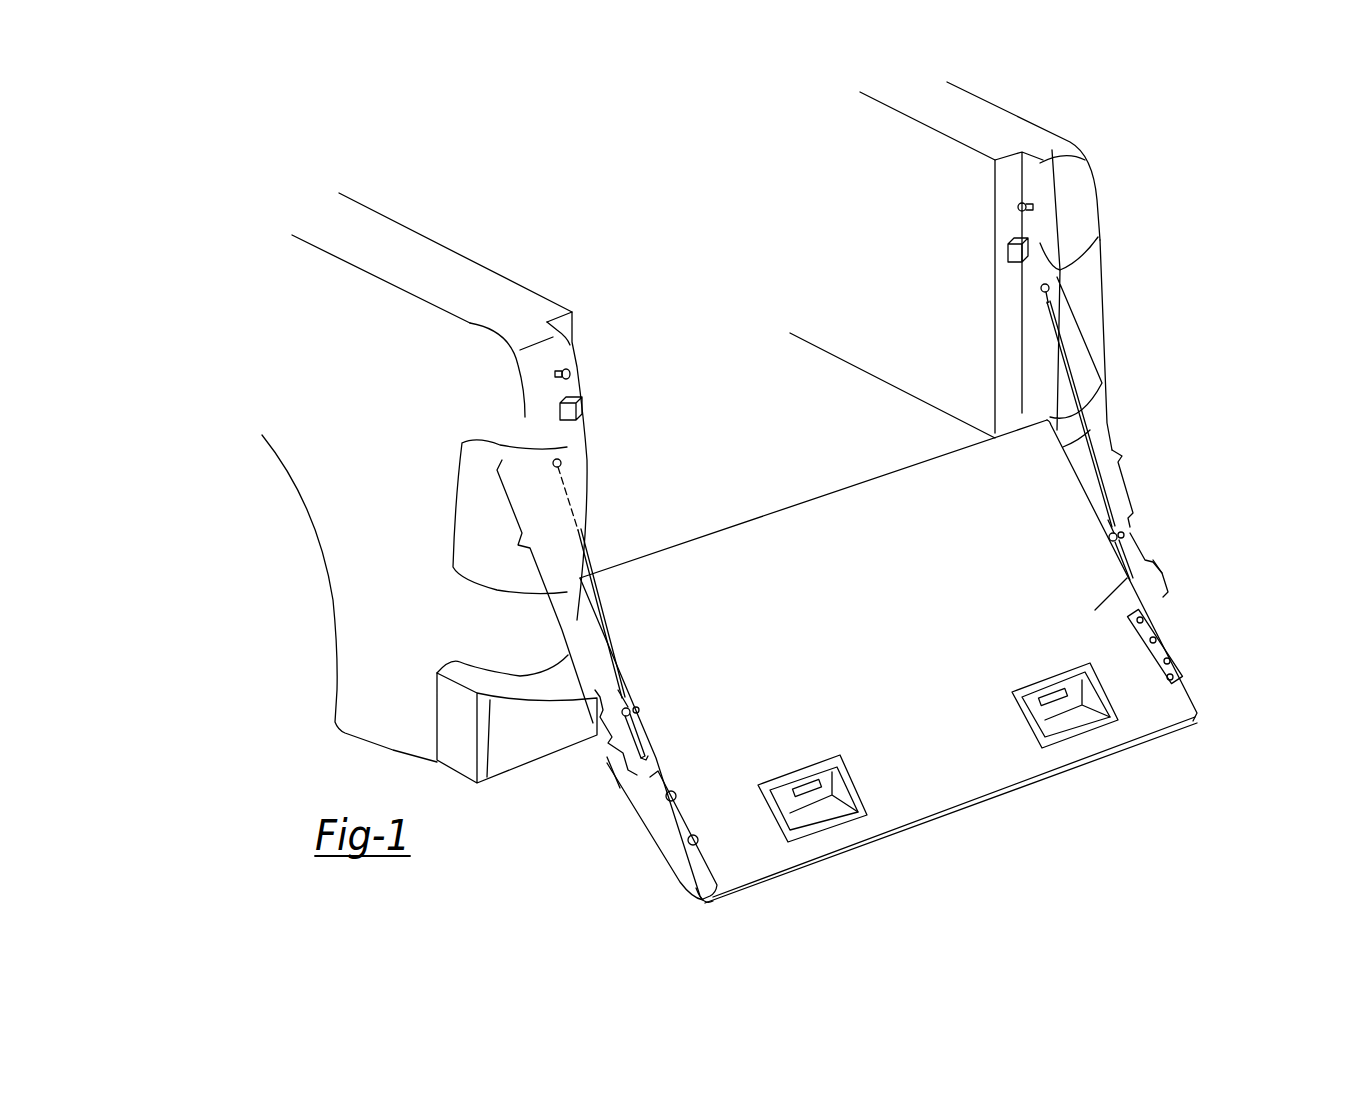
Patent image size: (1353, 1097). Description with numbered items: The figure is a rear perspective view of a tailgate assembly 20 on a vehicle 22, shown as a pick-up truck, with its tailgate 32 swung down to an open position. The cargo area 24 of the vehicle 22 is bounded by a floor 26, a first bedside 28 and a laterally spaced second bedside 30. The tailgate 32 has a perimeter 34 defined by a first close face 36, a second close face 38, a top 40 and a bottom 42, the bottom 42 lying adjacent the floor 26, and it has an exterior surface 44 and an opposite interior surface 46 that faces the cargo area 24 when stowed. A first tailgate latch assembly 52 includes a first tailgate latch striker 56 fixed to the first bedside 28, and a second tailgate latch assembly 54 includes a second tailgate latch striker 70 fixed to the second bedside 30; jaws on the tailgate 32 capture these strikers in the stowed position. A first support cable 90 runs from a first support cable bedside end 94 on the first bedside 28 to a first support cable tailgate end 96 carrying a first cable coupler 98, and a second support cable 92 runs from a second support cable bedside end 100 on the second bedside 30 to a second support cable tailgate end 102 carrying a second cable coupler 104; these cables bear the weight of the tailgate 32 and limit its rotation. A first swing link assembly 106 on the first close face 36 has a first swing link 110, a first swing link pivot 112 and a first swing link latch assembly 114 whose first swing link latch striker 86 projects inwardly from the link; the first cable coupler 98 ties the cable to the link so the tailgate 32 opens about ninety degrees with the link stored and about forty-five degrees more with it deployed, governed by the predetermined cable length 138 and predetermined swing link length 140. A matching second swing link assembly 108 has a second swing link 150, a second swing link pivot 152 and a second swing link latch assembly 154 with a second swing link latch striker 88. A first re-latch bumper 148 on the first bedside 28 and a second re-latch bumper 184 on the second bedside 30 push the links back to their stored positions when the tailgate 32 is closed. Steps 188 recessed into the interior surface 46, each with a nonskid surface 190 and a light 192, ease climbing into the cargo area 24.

The tailgate assembly 20 is at (1198, 447).
The vehicle 22 is at (286, 537).
The cargo area 24 is at (762, 397).
The floor 26 is at (855, 392).
The first bedside 28 is at (586, 436).
The second bedside 30 is at (1040, 243).
The tailgate 32 is at (803, 882).
The perimeter 34 is at (1200, 715).
The first close face 36 is at (583, 687).
The second close face 38 is at (1160, 614).
The top 40 is at (968, 805).
The bottom 42 is at (770, 506).
The exterior surface 44 is at (672, 877).
The interior surface 46 is at (910, 583).
The first tailgate latch assembly 52 is at (667, 830).
The second tailgate latch assembly 54 is at (1182, 680).
The first tailgate latch striker 56 is at (555, 375).
The second tailgate latch striker 70 is at (1018, 207).
The first swing link latch striker 86 is at (641, 710).
The second swing link latch striker 88 is at (1111, 541).
The first support cable 90 is at (605, 630).
The second support cable 92 is at (1092, 462).
The first support cable bedside end 94 is at (570, 466).
The first support cable tailgate end 96 is at (626, 682).
The first cable coupler 98 is at (636, 706).
The second support cable bedside end 100 is at (1037, 305).
The second support cable tailgate end 102 is at (1105, 517).
The second cable coupler 104 is at (1114, 535).
The first swing link assembly 106 is at (708, 678).
The second swing link assembly 108 is at (1033, 603).
The first swing link 110 is at (641, 737).
The first swing link pivot 112 is at (650, 758).
The first swing link latch assembly 114 is at (650, 795).
The predetermined cable length 138 is at (821, 575).
The predetermined swing link length 140 is at (540, 750).
The first re-latch bumper 148 is at (582, 403).
The second swing link 150 is at (1120, 565).
The second swing link pivot 152 is at (1103, 610).
The second swing link latch assembly 154 is at (1168, 638).
The second re-latch bumper 184 is at (1022, 252).
The steps 188 is at (850, 770).
The nonskid surface 190 is at (820, 820).
The light 192 is at (807, 786).